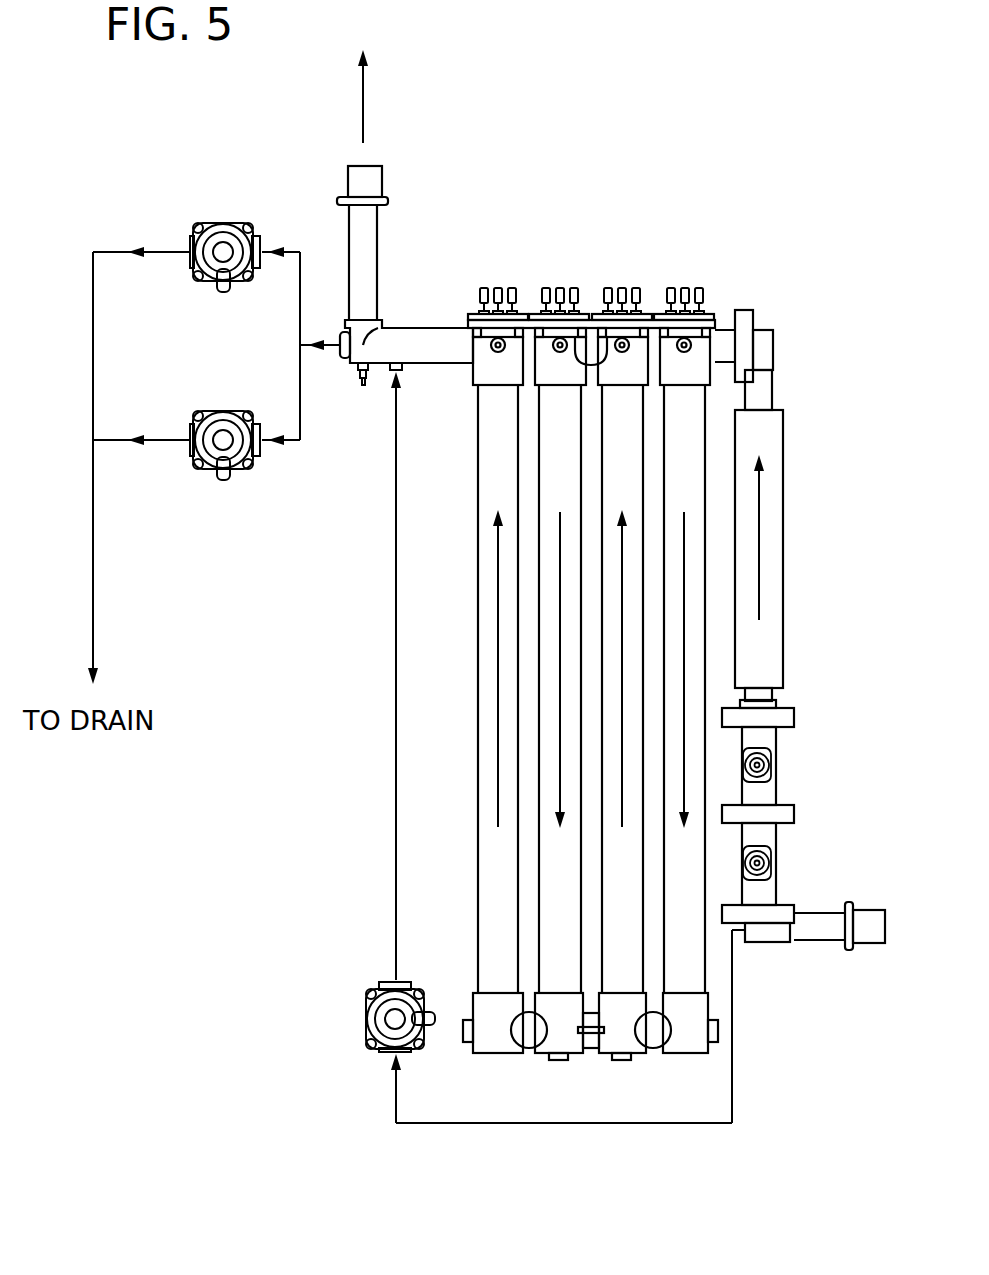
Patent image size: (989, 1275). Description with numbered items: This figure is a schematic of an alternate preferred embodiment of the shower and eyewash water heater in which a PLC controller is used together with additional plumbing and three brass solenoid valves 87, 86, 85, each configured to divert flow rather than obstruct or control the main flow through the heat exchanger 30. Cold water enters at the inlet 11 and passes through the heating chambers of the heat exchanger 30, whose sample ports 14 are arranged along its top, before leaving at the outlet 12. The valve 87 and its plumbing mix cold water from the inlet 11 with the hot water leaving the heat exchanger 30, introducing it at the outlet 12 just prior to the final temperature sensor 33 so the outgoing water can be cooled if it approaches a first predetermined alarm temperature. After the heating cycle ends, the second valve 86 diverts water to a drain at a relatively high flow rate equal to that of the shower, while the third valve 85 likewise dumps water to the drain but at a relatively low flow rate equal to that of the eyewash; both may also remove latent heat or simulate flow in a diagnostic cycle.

The inlet 11 is at (827, 923).
The outlet 12 is at (368, 233).
The sample ports 14 is at (681, 272).
The heat exchanger 30 is at (488, 637).
The final temperature sensor 33 is at (360, 383).
The third valve 85 is at (232, 248).
The second valve 86 is at (228, 442).
The valve 87 is at (370, 1012).